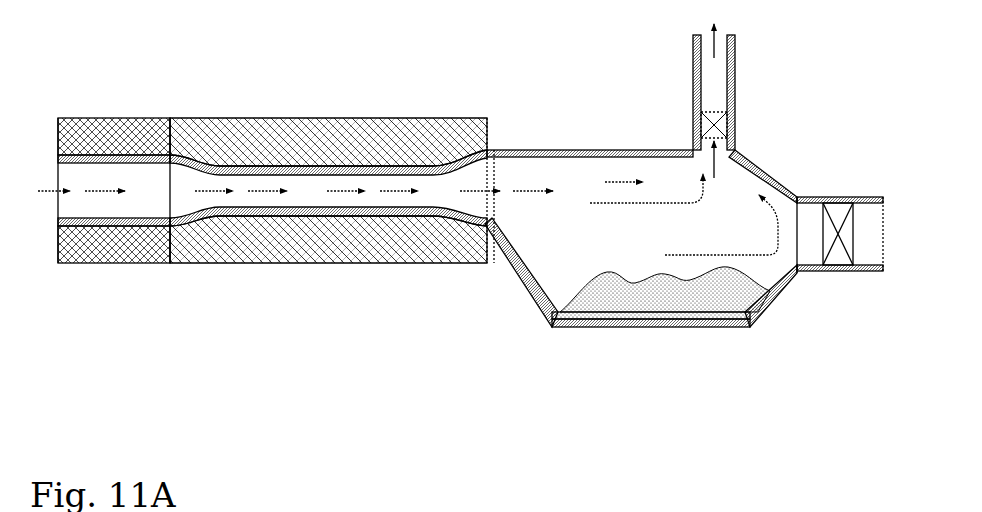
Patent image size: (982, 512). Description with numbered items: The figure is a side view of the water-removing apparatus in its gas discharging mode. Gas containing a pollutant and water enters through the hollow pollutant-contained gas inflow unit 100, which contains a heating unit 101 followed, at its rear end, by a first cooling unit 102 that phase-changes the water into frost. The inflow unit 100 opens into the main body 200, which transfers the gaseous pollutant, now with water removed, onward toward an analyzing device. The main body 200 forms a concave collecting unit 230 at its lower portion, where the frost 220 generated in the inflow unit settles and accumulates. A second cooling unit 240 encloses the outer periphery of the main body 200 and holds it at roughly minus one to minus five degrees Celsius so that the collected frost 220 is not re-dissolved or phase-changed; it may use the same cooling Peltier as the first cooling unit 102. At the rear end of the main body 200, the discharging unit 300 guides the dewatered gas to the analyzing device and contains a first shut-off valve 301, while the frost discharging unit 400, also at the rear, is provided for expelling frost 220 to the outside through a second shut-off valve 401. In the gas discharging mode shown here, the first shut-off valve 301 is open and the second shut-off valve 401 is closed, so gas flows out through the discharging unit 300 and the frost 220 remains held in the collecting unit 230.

The pollutant-contained gas inflow unit 100 is at (437, 58).
The heating unit 101 is at (139, 117).
The first cooling unit 102 is at (405, 117).
The main body 200 is at (535, 150).
The frost 220 is at (660, 300).
The collecting unit 230 is at (526, 285).
The second cooling unit 240 is at (569, 328).
The discharging unit 300 is at (693, 75).
The first shut-off valve 301 is at (727, 125).
The frost discharging unit 400 is at (860, 197).
The second shut-off valve 401 is at (835, 260).